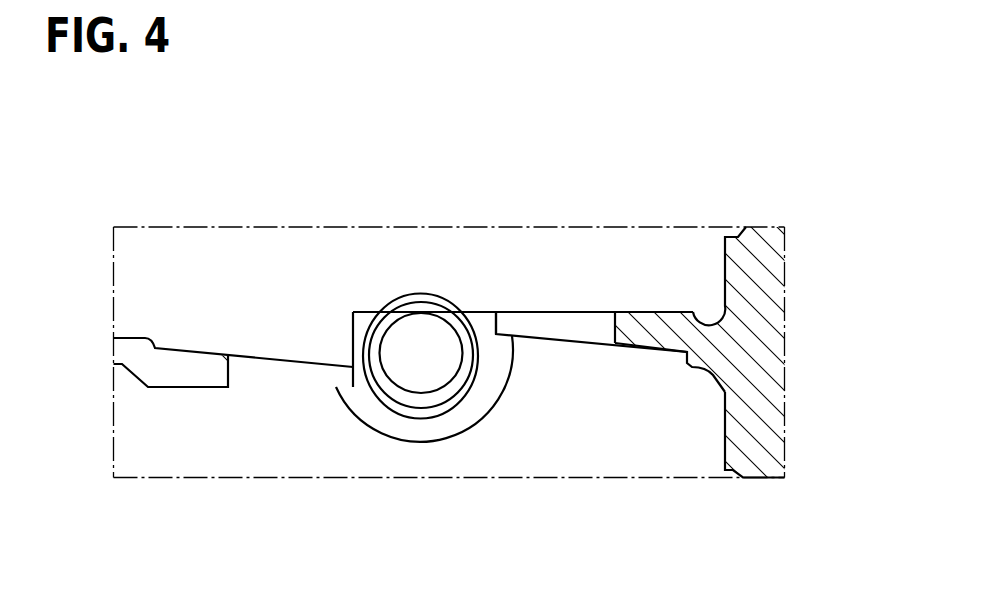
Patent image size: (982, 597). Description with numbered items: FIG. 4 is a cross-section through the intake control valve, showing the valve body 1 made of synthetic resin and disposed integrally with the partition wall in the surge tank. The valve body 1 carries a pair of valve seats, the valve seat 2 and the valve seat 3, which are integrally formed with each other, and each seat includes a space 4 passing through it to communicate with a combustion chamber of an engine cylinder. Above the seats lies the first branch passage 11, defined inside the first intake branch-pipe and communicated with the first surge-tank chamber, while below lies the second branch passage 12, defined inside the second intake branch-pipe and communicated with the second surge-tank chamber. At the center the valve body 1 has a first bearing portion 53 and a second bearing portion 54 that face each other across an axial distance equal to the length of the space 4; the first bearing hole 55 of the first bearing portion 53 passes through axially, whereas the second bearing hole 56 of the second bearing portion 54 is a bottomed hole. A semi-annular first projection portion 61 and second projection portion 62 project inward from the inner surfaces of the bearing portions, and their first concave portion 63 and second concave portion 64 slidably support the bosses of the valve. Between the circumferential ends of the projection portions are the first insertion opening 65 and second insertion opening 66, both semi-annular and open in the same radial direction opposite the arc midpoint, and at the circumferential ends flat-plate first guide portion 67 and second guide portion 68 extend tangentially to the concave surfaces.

The valve body 1 is at (772, 278).
The valve seat 2 is at (217, 353).
The valve seat 3 is at (658, 350).
The space 4 is at (264, 372).
The first branch passage 11 is at (618, 252).
The second branch passage 12 is at (522, 450).
The first bearing portion 53 is at (385, 252).
The second bearing portion 54 is at (389, 305).
The first bearing hole 55 is at (414, 266).
The second bearing hole 56 is at (388, 367).
The first projection portion 61 is at (414, 457).
The second projection portion 62 is at (385, 423).
The first concave portion 63 is at (443, 251).
The second concave portion 64 is at (462, 403).
The first insertion opening 65 is at (312, 183).
The second insertion opening 66 is at (365, 308).
The first guide portion 67 is at (536, 219).
The second guide portion 68 is at (478, 325).